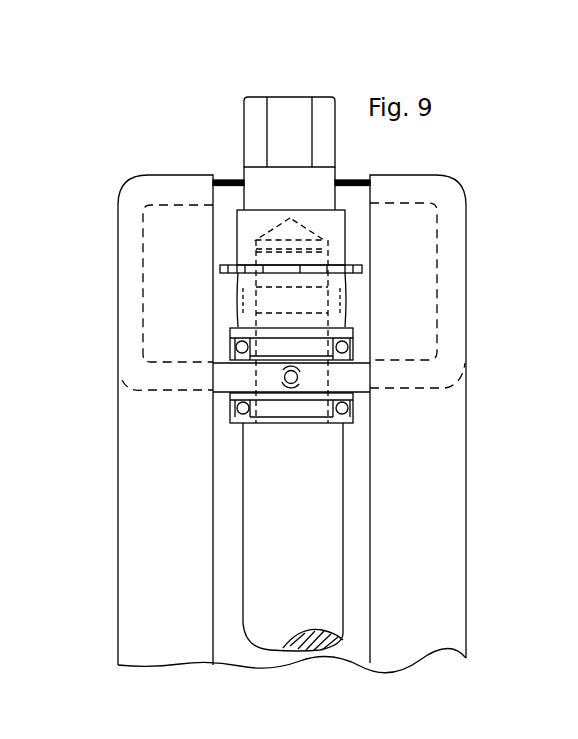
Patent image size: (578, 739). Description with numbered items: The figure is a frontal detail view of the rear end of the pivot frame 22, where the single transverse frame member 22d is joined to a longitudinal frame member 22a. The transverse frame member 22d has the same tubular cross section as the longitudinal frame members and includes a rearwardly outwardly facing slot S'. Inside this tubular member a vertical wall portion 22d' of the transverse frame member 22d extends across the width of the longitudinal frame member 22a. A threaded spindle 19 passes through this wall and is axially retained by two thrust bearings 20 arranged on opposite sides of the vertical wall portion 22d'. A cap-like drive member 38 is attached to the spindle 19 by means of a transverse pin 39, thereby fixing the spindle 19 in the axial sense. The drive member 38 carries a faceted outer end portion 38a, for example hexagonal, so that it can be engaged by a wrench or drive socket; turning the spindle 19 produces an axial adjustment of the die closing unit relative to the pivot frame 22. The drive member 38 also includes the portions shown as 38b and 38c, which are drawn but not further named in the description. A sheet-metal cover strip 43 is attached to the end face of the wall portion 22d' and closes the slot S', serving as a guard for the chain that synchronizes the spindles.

The drive member 38 is at (285, 93).
The faceted outer end portion 38a is at (275, 130).
The cover strip 43 is at (232, 181).
The bolt head body 38b is at (253, 221).
The flange 38c is at (220, 270).
The transverse pin 39 is at (243, 300).
The thrust bearing 20 is at (240, 333).
The vertical wall portion 22d' is at (257, 375).
The spindle 19 is at (273, 466).
The pivot frame 22 is at (452, 178).
The longitudinal frame member 22a is at (447, 483).
The transverse frame member 22d is at (348, 282).
The slot S' is at (303, 166).